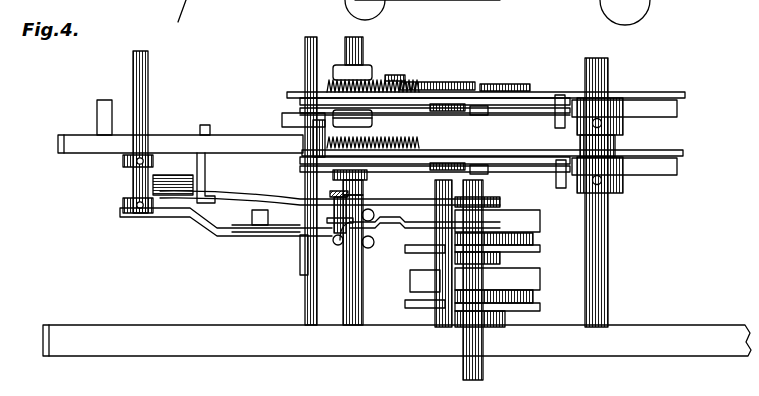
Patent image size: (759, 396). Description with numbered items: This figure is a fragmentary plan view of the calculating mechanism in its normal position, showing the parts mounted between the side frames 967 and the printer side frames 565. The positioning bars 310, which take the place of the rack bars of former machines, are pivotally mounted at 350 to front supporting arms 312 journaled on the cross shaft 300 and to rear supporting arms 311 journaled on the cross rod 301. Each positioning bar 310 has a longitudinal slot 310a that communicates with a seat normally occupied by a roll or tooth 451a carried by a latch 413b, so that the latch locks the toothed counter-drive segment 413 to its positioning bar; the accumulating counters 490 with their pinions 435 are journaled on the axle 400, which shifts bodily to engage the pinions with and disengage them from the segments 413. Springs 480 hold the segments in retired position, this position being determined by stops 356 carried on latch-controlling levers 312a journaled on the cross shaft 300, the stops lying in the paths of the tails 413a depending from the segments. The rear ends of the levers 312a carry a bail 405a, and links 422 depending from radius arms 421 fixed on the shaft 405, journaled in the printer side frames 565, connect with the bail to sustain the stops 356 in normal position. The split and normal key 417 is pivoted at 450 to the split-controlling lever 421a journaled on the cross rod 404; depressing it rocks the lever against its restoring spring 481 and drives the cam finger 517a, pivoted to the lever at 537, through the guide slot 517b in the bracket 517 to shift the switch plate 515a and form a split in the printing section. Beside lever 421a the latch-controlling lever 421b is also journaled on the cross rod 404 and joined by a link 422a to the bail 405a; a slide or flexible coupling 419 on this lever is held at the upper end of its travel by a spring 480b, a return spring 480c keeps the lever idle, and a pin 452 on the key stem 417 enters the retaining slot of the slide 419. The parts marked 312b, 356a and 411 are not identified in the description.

The cross shaft 300 is at (606, 290).
The cross rod 301 is at (355, 37).
The positioning bar 310 is at (660, 92).
The longitudinally extending slot 310a is at (393, 92).
The rear supporting arm 311 is at (298, 96).
The front supporting arm 312 is at (583, 102).
The latch-controlling lever 312a is at (528, 98).
The rod 312b is at (514, 113).
The pivot 350 is at (557, 95).
The stop 356 is at (485, 115).
The stop collar 356a is at (418, 111).
The axle 400 is at (484, 376).
The cross rod 404 is at (441, 330).
The shaft 405 is at (133, 184).
The bail 405a is at (312, 276).
The plate 411 is at (515, 311).
The counter-drive member 413 is at (428, 82).
The tail 413a is at (430, 82).
The latch 413b is at (492, 84).
The split and normal key 417 is at (328, 193).
The slide or flexible coupling 419 is at (300, 292).
The radius arm 421 is at (240, 238).
The split-controlling lever 421a is at (282, 192).
The latch-controlling lever 421b is at (245, 275).
The link 422 is at (281, 236).
The link 422a is at (258, 240).
The pinion 435 is at (500, 203).
The pivot 450 is at (350, 194).
The roll or tooth 451a is at (500, 84).
The pin 452 is at (343, 300).
The spring 480 is at (380, 79).
The spring 480b is at (365, 245).
The return spring 480c is at (374, 245).
The restoring spring 481 is at (380, 220).
The accumulating counter 490 is at (538, 278).
The switch plate 515a is at (202, 125).
The bracket 517 is at (193, 160).
The switch or cam finger 517a is at (186, 200).
The guide slot 517b is at (195, 175).
The pivot 537 is at (155, 218).
The printer side frame 565 is at (70, 148).
The side frame 967 is at (670, 339).